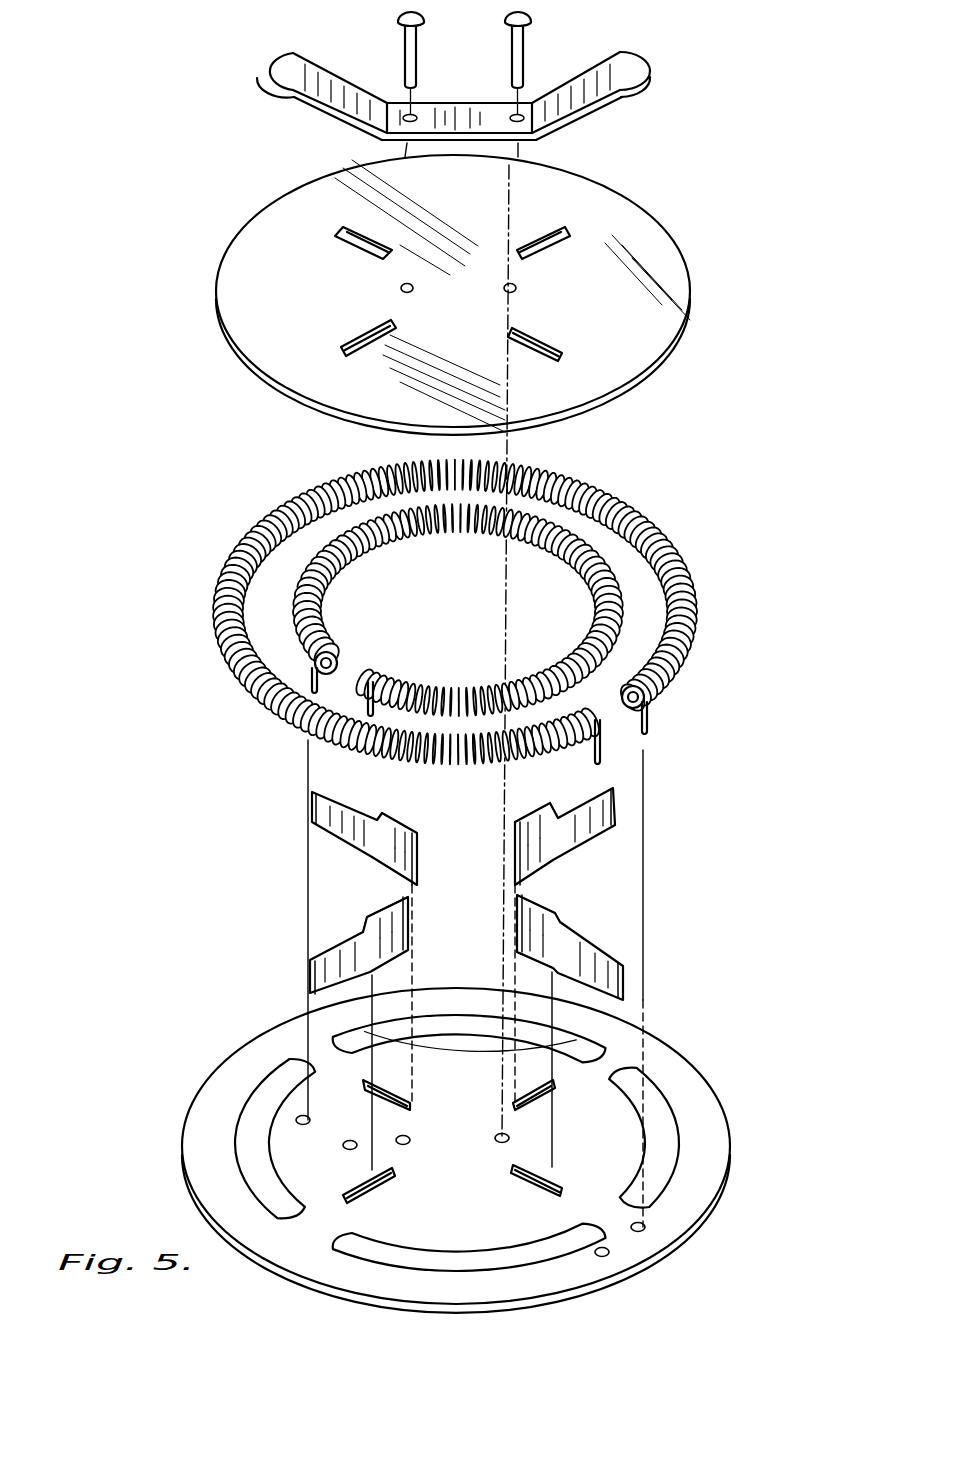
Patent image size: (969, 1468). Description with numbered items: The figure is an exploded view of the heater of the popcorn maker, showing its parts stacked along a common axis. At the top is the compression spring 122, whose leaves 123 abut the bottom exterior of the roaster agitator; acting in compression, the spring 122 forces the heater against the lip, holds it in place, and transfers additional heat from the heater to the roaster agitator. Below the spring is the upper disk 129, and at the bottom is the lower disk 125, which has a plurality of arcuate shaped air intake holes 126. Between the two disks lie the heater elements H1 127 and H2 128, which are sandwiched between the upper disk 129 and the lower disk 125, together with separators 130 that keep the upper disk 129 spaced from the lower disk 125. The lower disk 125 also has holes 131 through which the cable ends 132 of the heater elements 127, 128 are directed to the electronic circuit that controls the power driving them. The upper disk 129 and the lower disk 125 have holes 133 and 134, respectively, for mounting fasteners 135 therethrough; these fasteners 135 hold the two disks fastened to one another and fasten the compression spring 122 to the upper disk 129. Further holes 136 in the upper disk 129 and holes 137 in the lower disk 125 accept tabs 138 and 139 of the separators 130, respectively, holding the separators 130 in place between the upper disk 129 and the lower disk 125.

The compression spring 122 is at (580, 116).
The leaves 123 is at (268, 70).
The lower disk 125 is at (717, 1090).
The arcuate shaped air intake holes 126 is at (613, 1023).
The heater element H1 127 is at (668, 568).
The heater element H2 128 is at (300, 558).
The upper disk 129 is at (685, 330).
The separators 130 is at (333, 810).
The holes 131 is at (345, 1146).
The cable ends 132 is at (310, 688).
The holes 133 is at (402, 290).
The holes 134 is at (502, 1143).
The fasteners 135 is at (407, 46).
The holes 136 is at (345, 230).
The holes 137 is at (412, 1103).
The tabs 138 is at (392, 826).
The tabs 139 is at (387, 861).